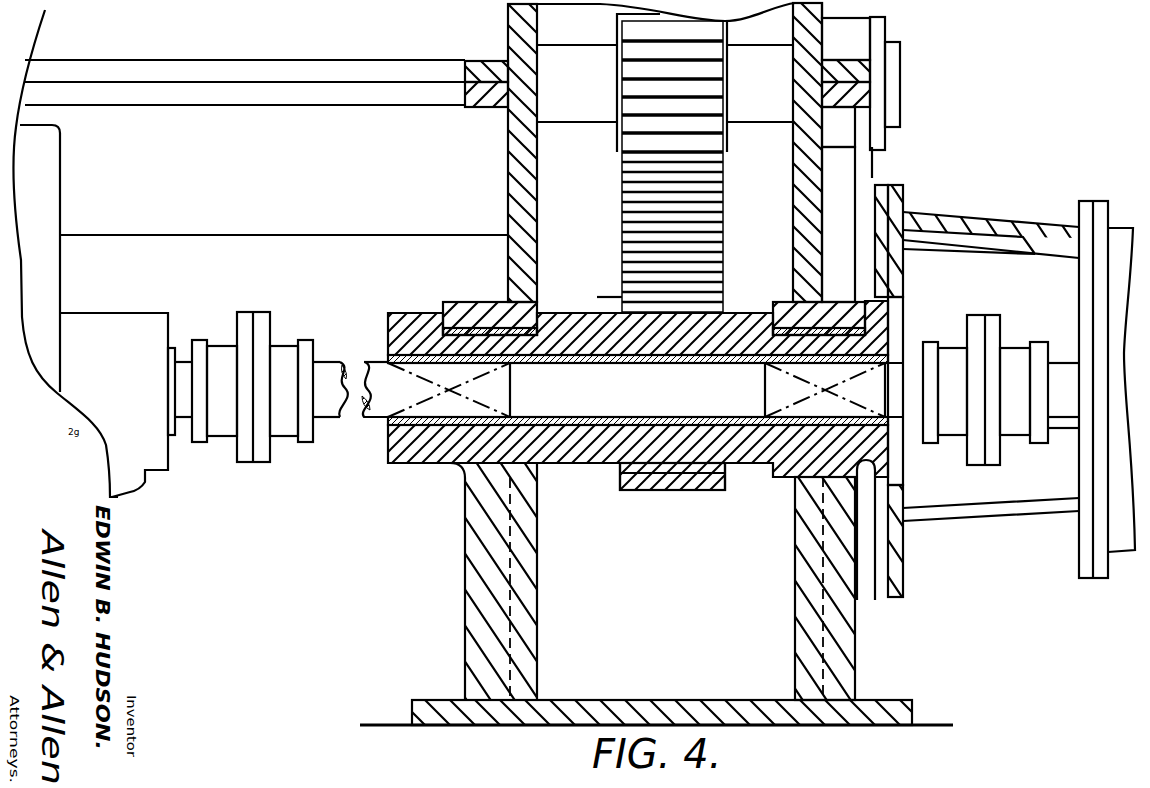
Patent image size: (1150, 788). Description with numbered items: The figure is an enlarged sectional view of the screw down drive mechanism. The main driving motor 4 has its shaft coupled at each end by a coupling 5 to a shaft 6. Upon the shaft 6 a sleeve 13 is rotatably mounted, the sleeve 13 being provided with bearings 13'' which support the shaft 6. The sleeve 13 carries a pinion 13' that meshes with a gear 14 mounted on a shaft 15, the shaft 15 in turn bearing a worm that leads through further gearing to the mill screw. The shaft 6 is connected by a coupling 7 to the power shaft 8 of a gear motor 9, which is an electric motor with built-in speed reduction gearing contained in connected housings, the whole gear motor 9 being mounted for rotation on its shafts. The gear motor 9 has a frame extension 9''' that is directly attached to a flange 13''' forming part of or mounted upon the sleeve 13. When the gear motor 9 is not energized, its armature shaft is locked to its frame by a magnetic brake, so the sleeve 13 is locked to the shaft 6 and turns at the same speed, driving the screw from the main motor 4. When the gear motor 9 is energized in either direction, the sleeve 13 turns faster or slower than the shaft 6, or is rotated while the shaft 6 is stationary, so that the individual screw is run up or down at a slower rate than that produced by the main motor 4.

The main driving motor 4 is at (47, 196).
The coupling 5 is at (258, 465).
The shaft 6 is at (324, 358).
The coupling 7 is at (986, 318).
The power shaft of gear motor 8 is at (1053, 362).
The gear motor 9 is at (1019, 384).
The frame extension 9''' is at (938, 381).
The sleeve 13 is at (656, 513).
The pinion 13' is at (672, 512).
The bearing 13'' is at (658, 399).
The flange 13''' is at (928, 387).
The gear 14 is at (728, 197).
The shaft 15 is at (752, 133).